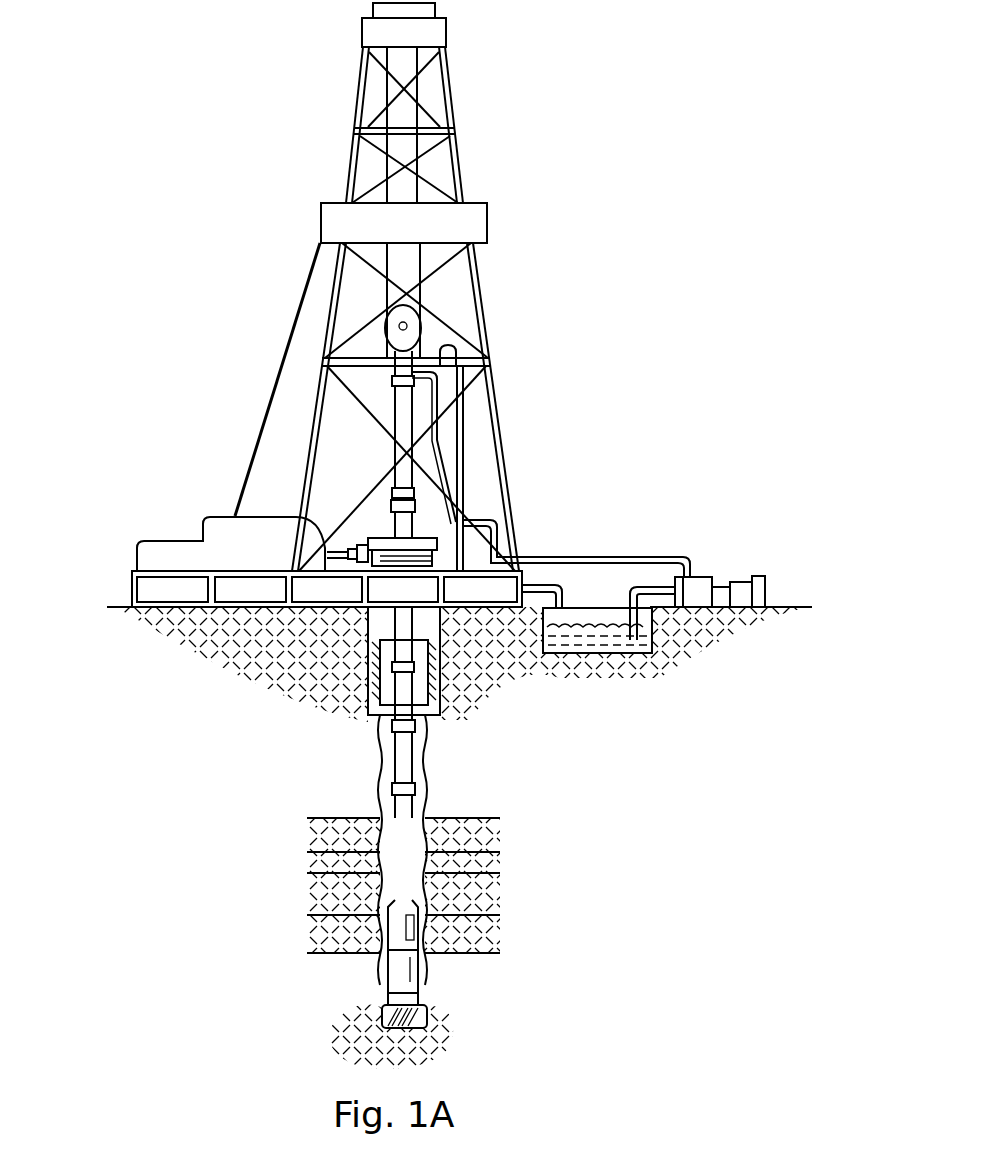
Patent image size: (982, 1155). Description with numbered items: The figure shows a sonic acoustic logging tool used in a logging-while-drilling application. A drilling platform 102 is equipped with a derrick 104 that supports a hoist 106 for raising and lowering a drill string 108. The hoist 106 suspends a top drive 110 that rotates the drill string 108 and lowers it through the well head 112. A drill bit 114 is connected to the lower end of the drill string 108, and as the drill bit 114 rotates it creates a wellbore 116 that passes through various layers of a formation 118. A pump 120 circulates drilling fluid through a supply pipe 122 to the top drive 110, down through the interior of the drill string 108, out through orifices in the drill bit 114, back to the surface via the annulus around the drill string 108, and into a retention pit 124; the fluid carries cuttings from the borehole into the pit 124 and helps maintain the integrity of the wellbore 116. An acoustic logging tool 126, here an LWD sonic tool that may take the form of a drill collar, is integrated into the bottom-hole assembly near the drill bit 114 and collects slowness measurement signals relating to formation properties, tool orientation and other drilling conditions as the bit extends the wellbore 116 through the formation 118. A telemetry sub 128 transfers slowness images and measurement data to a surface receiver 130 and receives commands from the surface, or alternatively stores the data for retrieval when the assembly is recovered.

The drilling platform 102 is at (132, 590).
The derrick 104 is at (457, 122).
The hoist 106 is at (421, 332).
The drill string 108 is at (413, 757).
The top drive 110 is at (393, 400).
The well head 112 is at (385, 540).
The drill bit 114 is at (428, 1005).
The wellbore 116 is at (379, 796).
The formation 118 is at (517, 813).
The pump 120 is at (700, 577).
The supply pipe 122 is at (597, 557).
The retention pit 124 is at (585, 627).
The acoustic logging tool 126 is at (388, 973).
The telemetry sub 128 is at (420, 933).
The surface receiver 130 is at (420, 493).